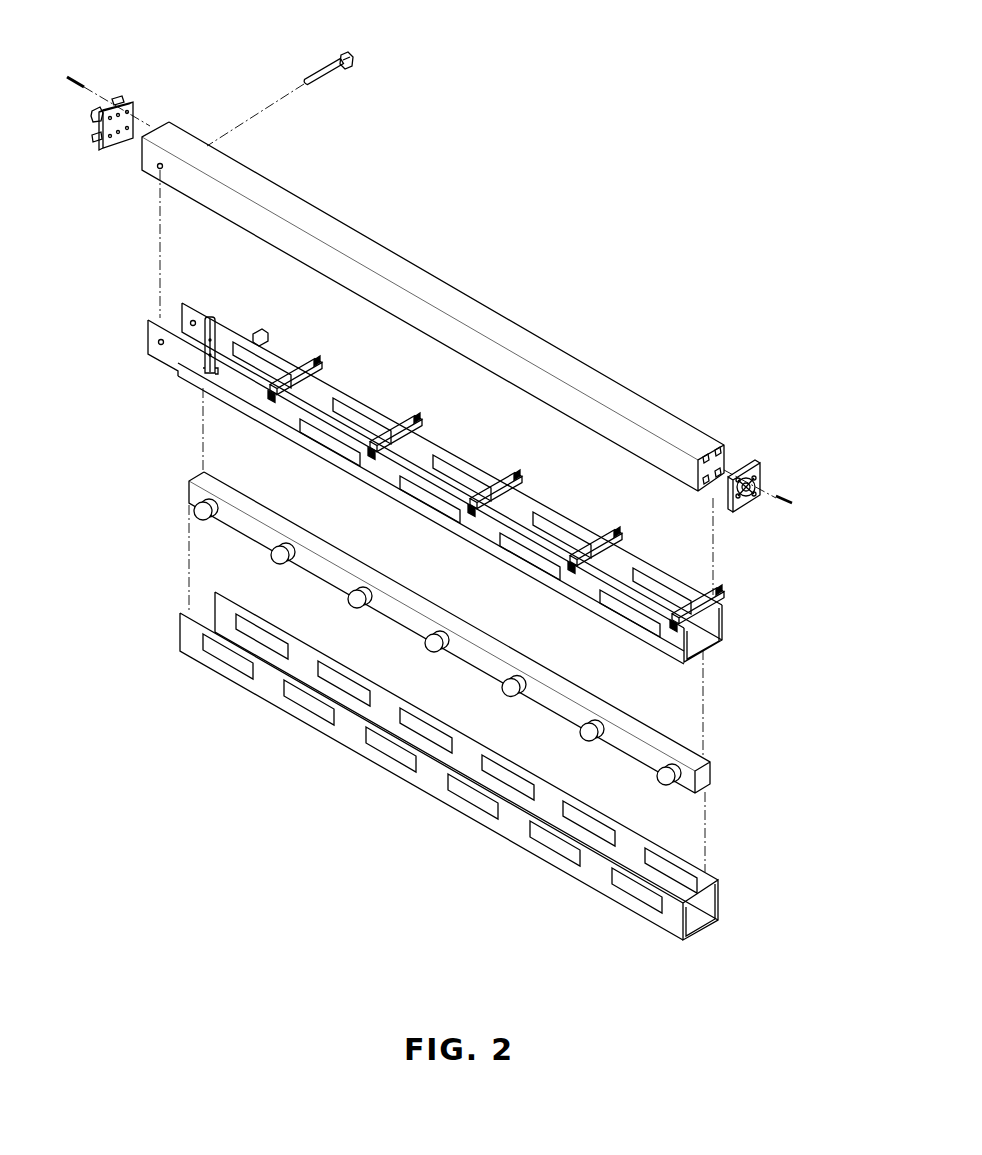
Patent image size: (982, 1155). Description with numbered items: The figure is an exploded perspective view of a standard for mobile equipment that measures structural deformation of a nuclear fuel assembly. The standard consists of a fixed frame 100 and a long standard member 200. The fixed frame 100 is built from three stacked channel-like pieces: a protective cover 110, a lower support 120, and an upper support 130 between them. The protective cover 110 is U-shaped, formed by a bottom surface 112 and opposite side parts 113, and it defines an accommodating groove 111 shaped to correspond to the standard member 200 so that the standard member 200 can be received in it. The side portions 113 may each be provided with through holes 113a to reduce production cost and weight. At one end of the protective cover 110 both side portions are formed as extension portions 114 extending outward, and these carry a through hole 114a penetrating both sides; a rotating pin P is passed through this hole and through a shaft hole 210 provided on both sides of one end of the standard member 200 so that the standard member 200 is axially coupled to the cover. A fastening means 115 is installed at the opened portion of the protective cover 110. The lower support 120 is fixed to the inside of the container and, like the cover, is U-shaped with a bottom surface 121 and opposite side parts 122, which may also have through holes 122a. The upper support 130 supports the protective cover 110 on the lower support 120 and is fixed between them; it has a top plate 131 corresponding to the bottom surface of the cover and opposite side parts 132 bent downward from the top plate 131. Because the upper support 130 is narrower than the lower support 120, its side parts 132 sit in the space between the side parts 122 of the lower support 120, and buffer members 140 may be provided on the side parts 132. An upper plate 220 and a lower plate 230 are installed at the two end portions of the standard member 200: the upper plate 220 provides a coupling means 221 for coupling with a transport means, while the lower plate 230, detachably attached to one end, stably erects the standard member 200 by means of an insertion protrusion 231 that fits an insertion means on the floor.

The fixed frame 100 is at (810, 832).
The protective cover 110 is at (724, 615).
The accommodating groove 111 is at (672, 585).
The bottom surface 112 is at (707, 648).
The opposite side parts 113 is at (722, 617).
The through holes 113a is at (330, 450).
The extension portions 114 is at (150, 323).
The through hole 114a is at (159, 343).
The fastening means 115 is at (423, 428).
The lower support 120 is at (722, 893).
The bottom surface 121 is at (718, 928).
The opposite side parts 122 is at (668, 925).
The through holes 122a is at (562, 848).
The upper support 130 is at (717, 776).
The top plate 131 is at (666, 740).
The opposite side parts 132 is at (655, 782).
The buffer members 140 is at (193, 511).
The standard member 200 is at (489, 293).
The shaft hole 210 is at (157, 169).
The upper plate 220 is at (741, 471).
The coupling means 221 is at (748, 497).
The lower plate 230 is at (133, 102).
The insertion protrusion 231 is at (96, 145).
The rotating pin P is at (327, 72).